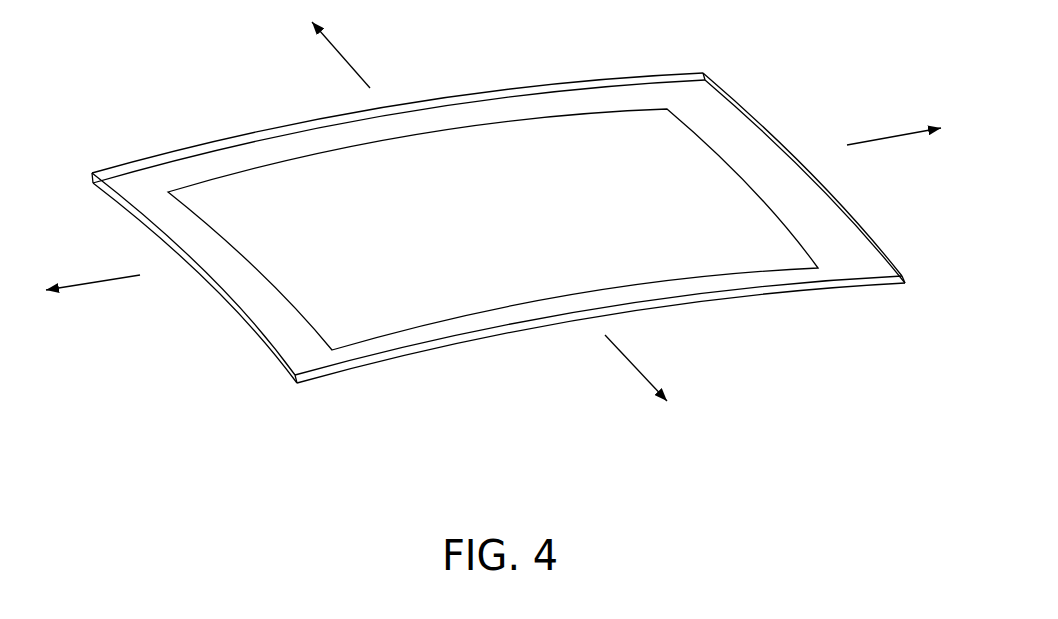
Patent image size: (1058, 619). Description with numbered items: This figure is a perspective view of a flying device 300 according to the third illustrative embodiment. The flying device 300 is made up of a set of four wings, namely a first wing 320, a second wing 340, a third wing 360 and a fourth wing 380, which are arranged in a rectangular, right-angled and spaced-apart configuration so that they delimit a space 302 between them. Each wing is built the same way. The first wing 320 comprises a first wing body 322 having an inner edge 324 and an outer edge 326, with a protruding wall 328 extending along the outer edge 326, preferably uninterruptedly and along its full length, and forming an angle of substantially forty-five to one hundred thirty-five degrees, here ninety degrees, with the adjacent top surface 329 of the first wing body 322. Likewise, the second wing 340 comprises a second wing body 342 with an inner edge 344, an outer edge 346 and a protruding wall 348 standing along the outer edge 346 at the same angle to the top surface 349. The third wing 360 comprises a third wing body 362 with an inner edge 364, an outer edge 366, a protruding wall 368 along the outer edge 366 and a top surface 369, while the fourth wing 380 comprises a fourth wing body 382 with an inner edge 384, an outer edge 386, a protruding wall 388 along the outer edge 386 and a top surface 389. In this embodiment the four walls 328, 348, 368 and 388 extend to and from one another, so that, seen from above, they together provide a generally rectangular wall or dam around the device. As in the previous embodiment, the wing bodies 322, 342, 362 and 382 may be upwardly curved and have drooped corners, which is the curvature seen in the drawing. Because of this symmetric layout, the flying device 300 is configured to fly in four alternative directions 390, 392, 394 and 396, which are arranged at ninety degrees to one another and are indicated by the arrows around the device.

The flying device 300 is at (236, 89).
The space 302 is at (570, 135).
The first wing 320 is at (240, 134).
The first wing body 322 is at (384, 141).
The inner edge 324 is at (453, 132).
The outer edge 326 is at (322, 127).
The protruding wall 328 is at (448, 103).
The top surface 329 is at (601, 93).
The second wing 340 is at (870, 224).
The second wing body 342 is at (712, 140).
The inner edge 344 is at (748, 182).
The outer edge 346 is at (834, 202).
The protruding wall 348 is at (884, 246).
The top surface 349 is at (720, 112).
The third wing 360 is at (632, 314).
The third wing body 362 is at (610, 287).
The inner edge 364 is at (568, 295).
The outer edge 366 is at (794, 280).
The protruding wall 368 is at (525, 323).
The top surface 369 is at (412, 340).
The fourth wing 380 is at (219, 294).
The fourth wing body 382 is at (233, 237).
The inner edge 384 is at (283, 287).
The outer edge 386 is at (292, 362).
The protruding wall 388 is at (109, 189).
The top surface 389 is at (267, 310).
The direction 390 is at (342, 56).
The direction 392 is at (896, 134).
The direction 394 is at (637, 370).
The direction 396 is at (117, 280).